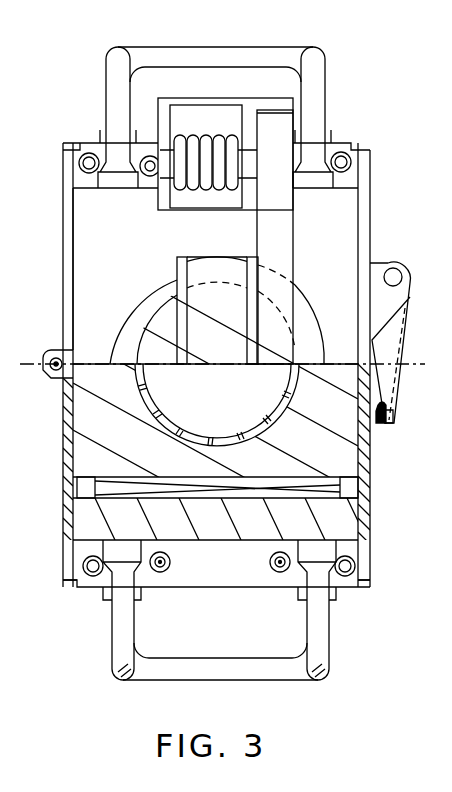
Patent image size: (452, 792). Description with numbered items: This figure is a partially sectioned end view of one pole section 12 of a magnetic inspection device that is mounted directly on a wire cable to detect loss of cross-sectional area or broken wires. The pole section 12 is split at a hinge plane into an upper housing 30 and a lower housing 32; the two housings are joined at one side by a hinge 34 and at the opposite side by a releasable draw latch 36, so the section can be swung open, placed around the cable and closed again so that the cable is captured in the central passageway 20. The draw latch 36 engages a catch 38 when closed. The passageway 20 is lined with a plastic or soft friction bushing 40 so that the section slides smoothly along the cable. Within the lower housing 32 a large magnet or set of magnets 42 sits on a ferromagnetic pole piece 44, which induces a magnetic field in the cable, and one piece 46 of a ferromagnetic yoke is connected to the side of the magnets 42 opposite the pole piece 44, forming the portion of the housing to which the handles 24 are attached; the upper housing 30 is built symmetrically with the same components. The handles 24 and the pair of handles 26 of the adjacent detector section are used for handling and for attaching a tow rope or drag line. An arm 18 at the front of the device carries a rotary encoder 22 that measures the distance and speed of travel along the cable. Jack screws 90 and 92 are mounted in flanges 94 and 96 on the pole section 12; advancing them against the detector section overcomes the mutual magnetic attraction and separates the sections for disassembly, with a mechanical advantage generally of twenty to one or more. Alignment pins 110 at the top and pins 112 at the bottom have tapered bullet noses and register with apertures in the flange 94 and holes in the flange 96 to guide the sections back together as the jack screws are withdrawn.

The pole section 12 is at (378, 140).
The arm 18 is at (296, 228).
The central passageway 20 is at (166, 318).
The rotary encoder 22 is at (205, 256).
The handles 24 is at (110, 66).
The handles 26 is at (240, 47).
The upper housing 30 is at (70, 294).
The lower housing 32 is at (68, 440).
The hinge 34 is at (55, 357).
The releasable draw latch 36 is at (398, 337).
The latch catch 38 is at (412, 365).
The friction bushing 40 is at (222, 437).
The magnets 42 is at (345, 486).
The ferromagnetic pole piece 44 is at (96, 414).
The ferromagnetic yoke piece 46 is at (345, 528).
The jack screws 90 is at (88, 152).
The jack screws 92 is at (81, 566).
The flange 94 is at (78, 176).
The flange 96 is at (90, 552).
The alignment pins 110 is at (150, 177).
The alignment pins 112 is at (172, 562).